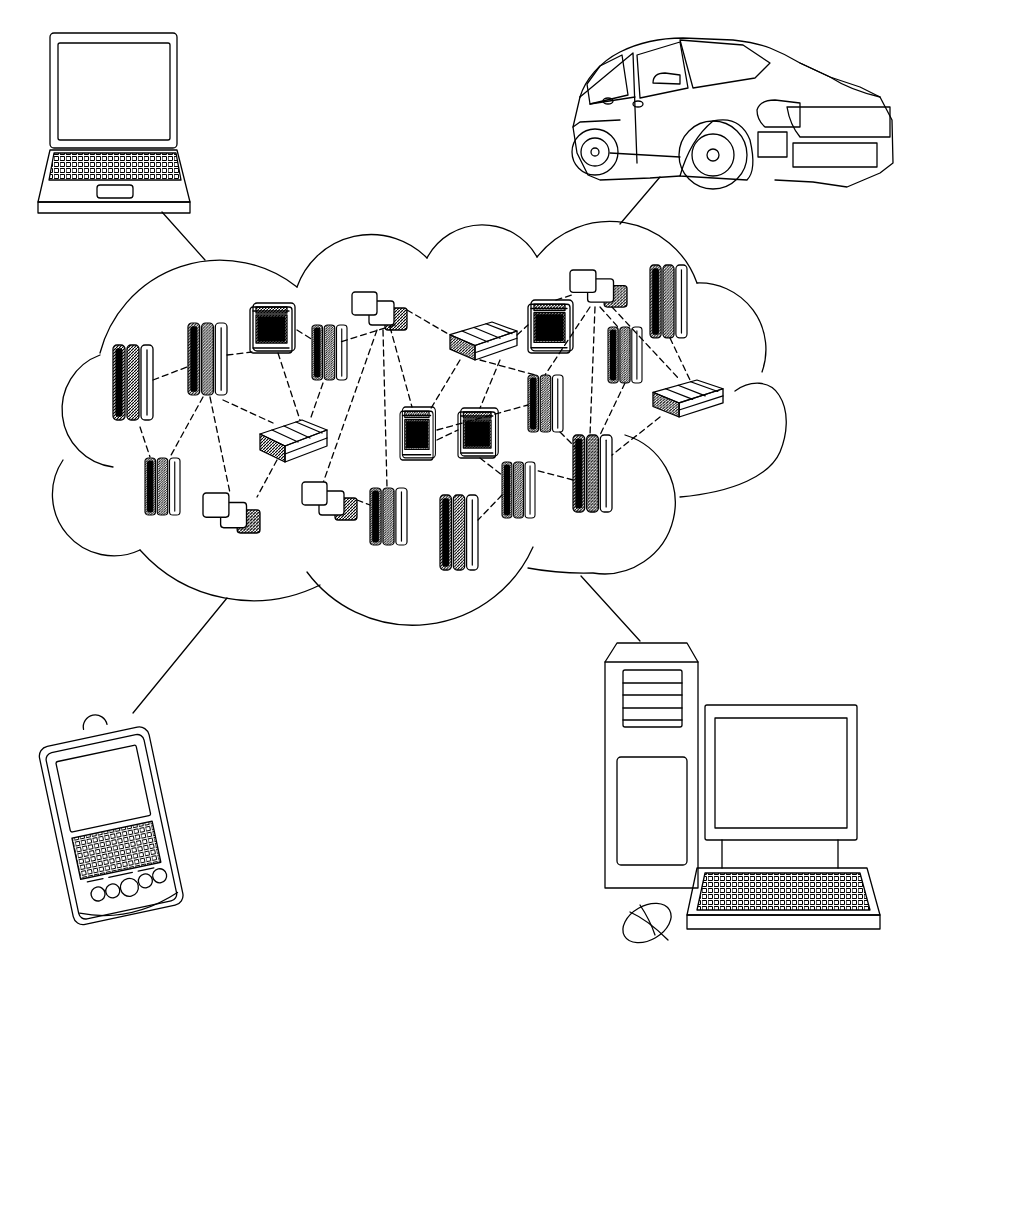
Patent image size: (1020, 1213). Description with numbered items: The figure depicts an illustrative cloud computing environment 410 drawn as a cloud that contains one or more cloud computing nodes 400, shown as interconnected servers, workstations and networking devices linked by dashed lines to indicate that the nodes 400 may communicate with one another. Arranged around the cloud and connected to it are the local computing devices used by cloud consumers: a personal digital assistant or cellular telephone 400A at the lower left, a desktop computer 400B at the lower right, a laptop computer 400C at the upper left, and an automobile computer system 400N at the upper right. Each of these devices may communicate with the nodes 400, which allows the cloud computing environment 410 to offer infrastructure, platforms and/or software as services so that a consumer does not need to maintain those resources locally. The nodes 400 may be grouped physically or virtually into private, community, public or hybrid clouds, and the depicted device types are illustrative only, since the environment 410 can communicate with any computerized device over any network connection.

The cloud computing nodes 400 is at (725, 427).
The cloud computing environment 410 is at (780, 390).
The personal digital assistant (PDA) or cellular telephone 400A is at (167, 807).
The desktop computer 400B is at (777, 705).
The laptop computer 400C is at (178, 101).
The automobile computer system 400N is at (581, 120).